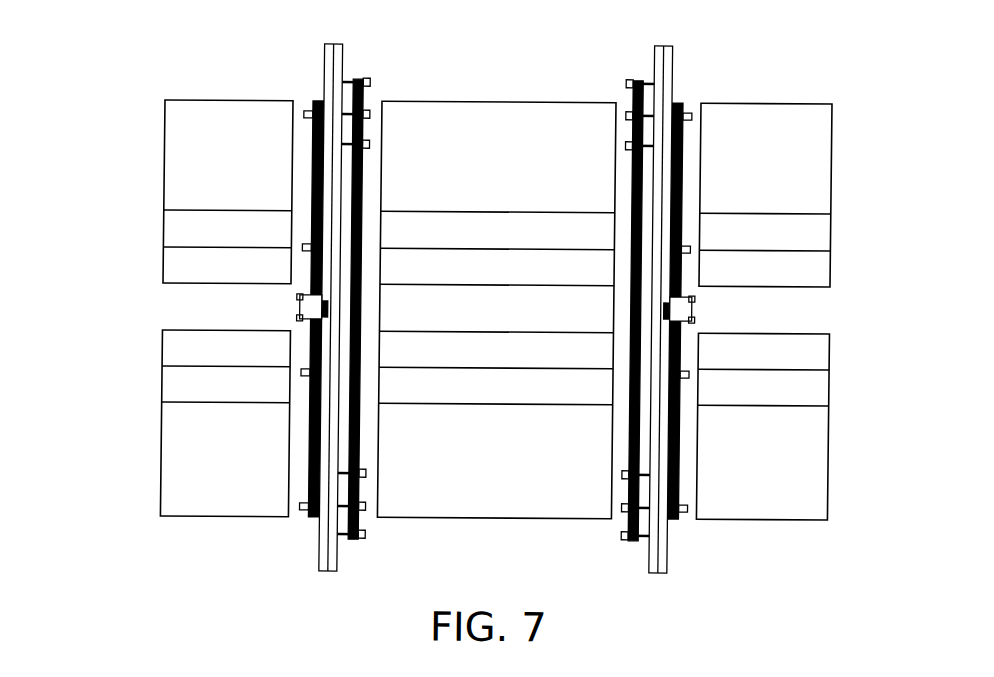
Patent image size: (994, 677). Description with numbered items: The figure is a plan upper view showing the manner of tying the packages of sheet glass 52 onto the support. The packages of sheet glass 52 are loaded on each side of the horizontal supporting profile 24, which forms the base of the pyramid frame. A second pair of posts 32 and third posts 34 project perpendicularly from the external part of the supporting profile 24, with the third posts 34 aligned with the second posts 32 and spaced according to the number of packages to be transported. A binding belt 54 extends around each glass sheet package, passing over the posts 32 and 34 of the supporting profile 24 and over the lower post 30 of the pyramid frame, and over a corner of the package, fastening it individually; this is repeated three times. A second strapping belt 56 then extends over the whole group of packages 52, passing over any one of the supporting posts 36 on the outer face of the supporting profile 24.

The supporting profile 24 is at (331, 531).
The first pair of posts 30 is at (295, 295).
The second pair of posts 32 is at (303, 370).
The third posts 34 is at (689, 105).
The supporting posts 36 is at (350, 77).
The packages of sheet glass 52 is at (194, 187).
The binding belt 54 is at (313, 453).
The second strapping belt 56 is at (634, 439).